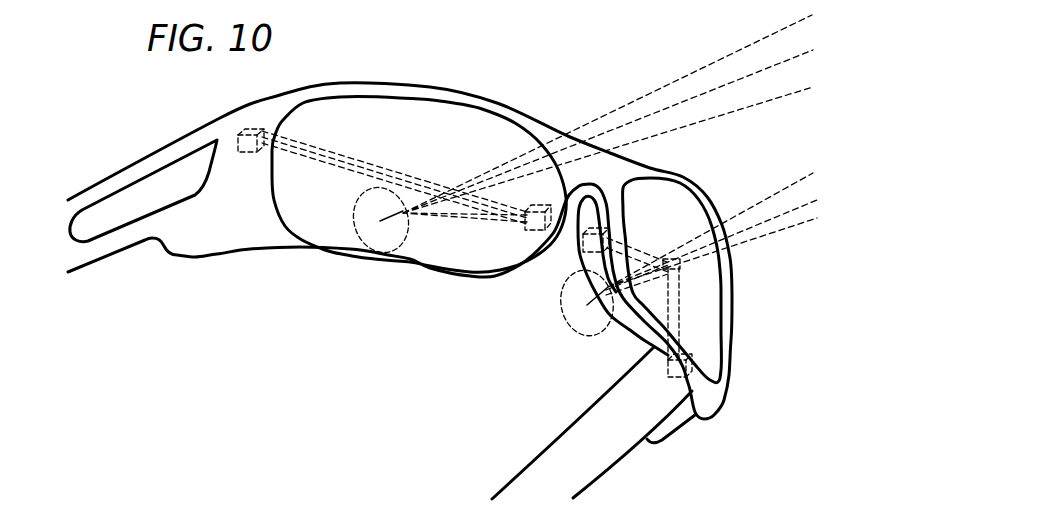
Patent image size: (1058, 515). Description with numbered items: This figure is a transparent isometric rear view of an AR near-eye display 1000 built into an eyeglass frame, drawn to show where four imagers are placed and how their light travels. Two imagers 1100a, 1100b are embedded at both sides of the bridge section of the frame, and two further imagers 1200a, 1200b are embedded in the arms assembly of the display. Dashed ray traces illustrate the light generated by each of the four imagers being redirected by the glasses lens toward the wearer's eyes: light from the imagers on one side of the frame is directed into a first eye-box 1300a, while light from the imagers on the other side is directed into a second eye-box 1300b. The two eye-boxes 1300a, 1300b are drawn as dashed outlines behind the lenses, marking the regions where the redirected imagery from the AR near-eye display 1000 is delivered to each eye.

The AR near-eye display 1000 is at (188, 102).
The imager 1100a is at (526, 225).
The imager 1100b is at (584, 247).
The imager 1200a is at (242, 147).
The imager 1200b is at (672, 375).
The eye-box 1300a is at (357, 223).
The eye-box 1300b is at (595, 337).